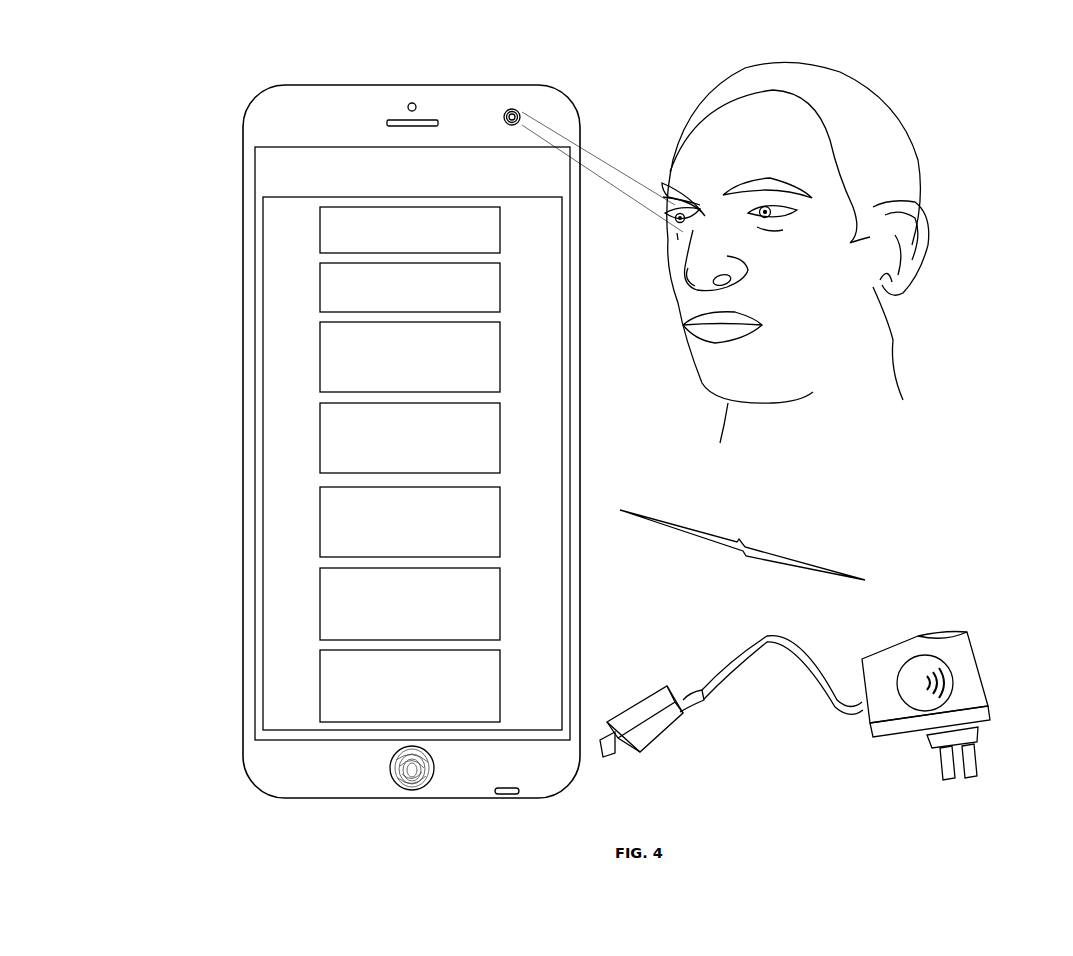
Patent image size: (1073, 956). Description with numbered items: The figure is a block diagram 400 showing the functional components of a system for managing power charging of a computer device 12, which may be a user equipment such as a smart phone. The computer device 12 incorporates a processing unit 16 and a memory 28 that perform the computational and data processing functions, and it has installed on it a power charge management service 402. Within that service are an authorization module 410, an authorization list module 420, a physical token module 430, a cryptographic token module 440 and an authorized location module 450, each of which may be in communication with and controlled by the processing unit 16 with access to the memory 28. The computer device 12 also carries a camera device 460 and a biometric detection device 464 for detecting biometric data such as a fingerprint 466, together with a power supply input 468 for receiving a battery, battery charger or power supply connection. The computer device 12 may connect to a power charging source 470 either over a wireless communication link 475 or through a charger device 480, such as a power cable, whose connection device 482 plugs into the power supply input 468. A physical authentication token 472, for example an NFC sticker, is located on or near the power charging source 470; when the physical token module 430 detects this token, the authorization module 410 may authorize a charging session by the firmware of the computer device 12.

The block diagram 400 is at (195, 90).
The computer device 12 is at (412, 443).
The processing unit 16 is at (410, 230).
The memory 28 is at (410, 287).
The power charge management service 402 is at (412, 463).
The authorization module 410 is at (410, 357).
The authorization list module 420 is at (410, 438).
The physical token module 430 is at (410, 522).
The cryptographic token module 440 is at (410, 604).
The authorized location module 450 is at (410, 686).
The camera device 460 is at (505, 110).
The biometric detection device 464 is at (390, 768).
The fingerprint 466 is at (423, 778).
The power supply input 468 is at (508, 786).
The power charging source 470 is at (890, 643).
The physical authentication token 472 is at (950, 655).
The wireless communication link 475 is at (757, 547).
The charger device 480 is at (645, 690).
The connection device 482 is at (742, 642).